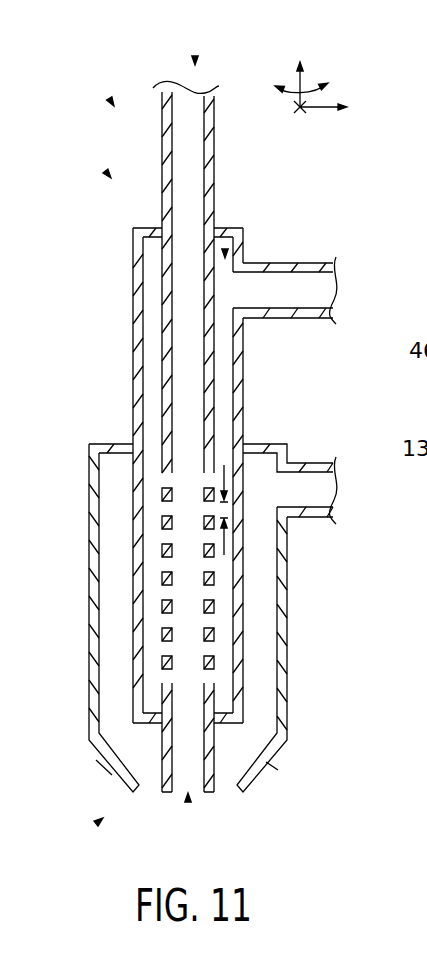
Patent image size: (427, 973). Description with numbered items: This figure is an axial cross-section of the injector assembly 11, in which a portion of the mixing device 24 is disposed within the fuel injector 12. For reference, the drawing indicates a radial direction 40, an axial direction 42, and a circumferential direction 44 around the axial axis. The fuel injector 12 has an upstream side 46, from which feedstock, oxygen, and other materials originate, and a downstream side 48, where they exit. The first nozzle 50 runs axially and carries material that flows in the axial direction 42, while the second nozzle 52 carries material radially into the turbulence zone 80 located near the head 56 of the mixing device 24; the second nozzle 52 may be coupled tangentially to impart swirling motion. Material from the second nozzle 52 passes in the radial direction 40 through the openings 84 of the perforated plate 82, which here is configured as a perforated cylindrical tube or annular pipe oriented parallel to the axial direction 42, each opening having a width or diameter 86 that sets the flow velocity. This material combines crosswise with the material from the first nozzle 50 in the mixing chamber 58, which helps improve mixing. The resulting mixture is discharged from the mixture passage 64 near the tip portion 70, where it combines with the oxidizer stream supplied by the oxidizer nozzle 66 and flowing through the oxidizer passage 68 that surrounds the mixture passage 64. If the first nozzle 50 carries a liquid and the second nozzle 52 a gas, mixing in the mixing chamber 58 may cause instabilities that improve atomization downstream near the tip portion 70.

The injector assembly 11 is at (110, 176).
The fuel injector 12 is at (196, 62).
The mixing device 24 is at (258, 634).
The radial direction 40 is at (318, 110).
The axial direction 42 is at (303, 80).
The circumferential direction 44 is at (326, 91).
The upstream side 46 is at (113, 104).
The downstream side 48 is at (100, 820).
The first nozzle 50 is at (214, 147).
The second nozzle 52 is at (286, 268).
The head 56 is at (133, 292).
The mixing chamber 58 is at (186, 574).
The mixture passage 64 is at (215, 737).
The oxidizer nozzle 66 is at (312, 462).
The oxidizer passage 68 is at (90, 596).
The tip portion 70 is at (188, 796).
The turbulence zone 80 is at (225, 256).
The perforated plate 82 is at (163, 525).
The openings 84 is at (198, 486).
The diameter 86 is at (228, 538).